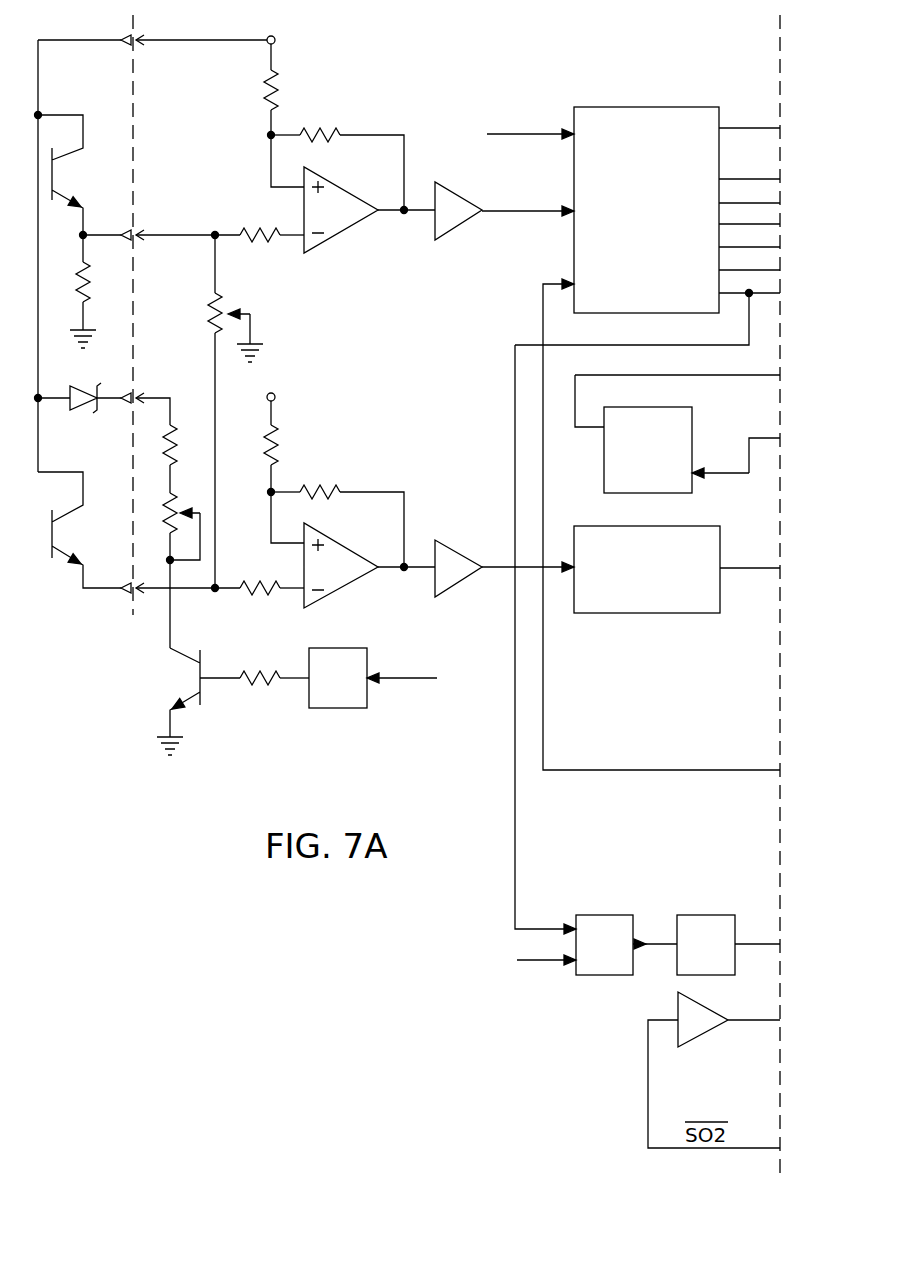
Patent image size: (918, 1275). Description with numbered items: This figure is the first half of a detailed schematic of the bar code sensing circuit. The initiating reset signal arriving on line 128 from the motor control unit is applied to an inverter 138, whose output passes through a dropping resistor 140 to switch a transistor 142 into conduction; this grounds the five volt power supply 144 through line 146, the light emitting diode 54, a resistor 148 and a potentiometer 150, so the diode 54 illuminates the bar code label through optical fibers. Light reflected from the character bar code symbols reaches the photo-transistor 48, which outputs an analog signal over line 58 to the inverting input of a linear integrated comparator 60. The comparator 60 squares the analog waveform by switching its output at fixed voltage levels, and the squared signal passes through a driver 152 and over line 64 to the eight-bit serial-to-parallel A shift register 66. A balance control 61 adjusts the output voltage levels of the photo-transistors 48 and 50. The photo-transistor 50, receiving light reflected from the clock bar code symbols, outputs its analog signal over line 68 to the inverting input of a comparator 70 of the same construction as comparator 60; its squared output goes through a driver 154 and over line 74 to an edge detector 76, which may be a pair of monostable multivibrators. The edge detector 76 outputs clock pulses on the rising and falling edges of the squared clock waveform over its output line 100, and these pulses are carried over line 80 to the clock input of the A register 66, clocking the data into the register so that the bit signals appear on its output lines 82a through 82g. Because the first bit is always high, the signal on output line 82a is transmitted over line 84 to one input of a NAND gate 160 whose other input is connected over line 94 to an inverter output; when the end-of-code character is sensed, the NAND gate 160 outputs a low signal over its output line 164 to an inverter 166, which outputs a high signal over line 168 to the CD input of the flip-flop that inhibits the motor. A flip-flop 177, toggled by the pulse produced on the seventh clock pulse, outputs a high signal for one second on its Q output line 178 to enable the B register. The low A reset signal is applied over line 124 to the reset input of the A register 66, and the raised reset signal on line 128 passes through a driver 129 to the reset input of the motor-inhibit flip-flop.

The line 146 is at (38, 65).
The photo-transistor 48 is at (83, 172).
The line 58 is at (160, 232).
The 5 volt power supply 144 is at (275, 40).
The line 124 is at (528, 133).
The driver 152 is at (447, 198).
The comparator 60 is at (345, 227).
The line 64 is at (548, 215).
The A shift register 66 is at (635, 107).
The output line 82g is at (763, 127).
The output line 82a is at (769, 296).
The Q output line 178 is at (632, 375).
The flip-flop 177 is at (692, 416).
The output line 100 is at (770, 567).
The edge detector 76 is at (637, 612).
The light emitting diode 54 is at (85, 410).
The photo-transistor 50 is at (60, 527).
The potentiometer 150 is at (177, 493).
The resistor 148 is at (177, 437).
The balance control 61 is at (262, 313).
The line 68 is at (185, 591).
The comparator 70 is at (340, 582).
The driver 154 is at (468, 560).
The line 74 is at (503, 577).
The dropping resistor 140 is at (255, 667).
The line 128 is at (397, 675).
The transistor 142 is at (213, 705).
The inverter 138 is at (338, 700).
The line 80 is at (543, 694).
The line 84 is at (515, 815).
The NAND gate 160 is at (608, 922).
The inverter 166 is at (708, 920).
The line 94 is at (535, 962).
The output line 164 is at (665, 945).
The line 168 is at (768, 947).
The driver 129 is at (693, 1033).